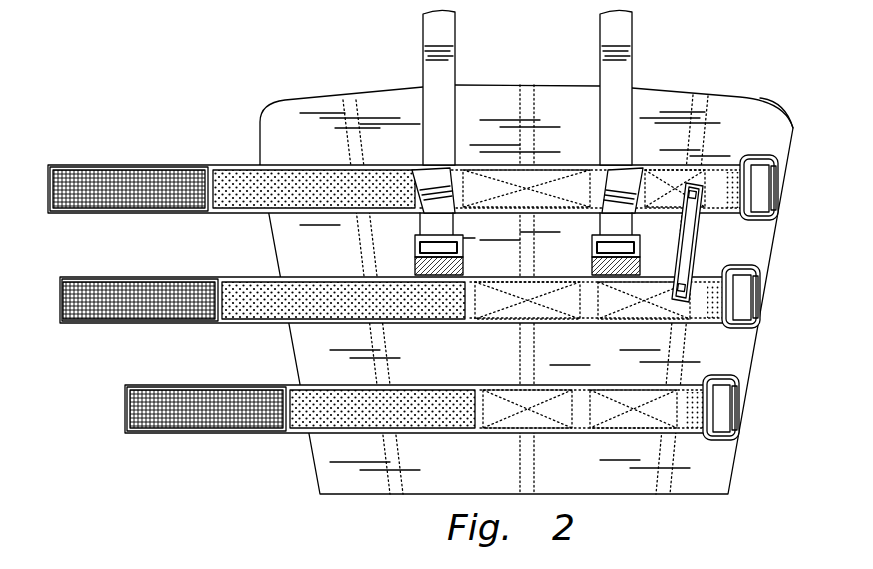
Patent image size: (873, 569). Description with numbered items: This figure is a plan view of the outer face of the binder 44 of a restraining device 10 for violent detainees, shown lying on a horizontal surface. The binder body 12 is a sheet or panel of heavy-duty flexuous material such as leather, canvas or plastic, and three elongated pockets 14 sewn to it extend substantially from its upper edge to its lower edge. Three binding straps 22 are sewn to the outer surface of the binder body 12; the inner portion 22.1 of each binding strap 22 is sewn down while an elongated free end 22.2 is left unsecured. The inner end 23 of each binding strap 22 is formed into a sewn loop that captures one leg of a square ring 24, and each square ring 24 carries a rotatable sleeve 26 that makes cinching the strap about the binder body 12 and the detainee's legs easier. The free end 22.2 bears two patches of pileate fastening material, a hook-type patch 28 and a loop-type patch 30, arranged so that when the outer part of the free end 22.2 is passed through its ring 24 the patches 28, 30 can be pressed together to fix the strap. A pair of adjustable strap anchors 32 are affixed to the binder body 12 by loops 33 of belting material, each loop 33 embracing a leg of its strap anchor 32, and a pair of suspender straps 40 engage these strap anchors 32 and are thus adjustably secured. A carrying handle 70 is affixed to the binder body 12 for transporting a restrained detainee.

The restraining device 10 is at (228, 503).
The binder body 12 is at (470, 95).
The elongated pockets 14 is at (348, 108).
The binding strap 22 is at (95, 213).
The inner portion of binding strap 22.1 is at (545, 170).
The free end of binding strap 22.2 is at (258, 170).
The inner end of binding strap 23 is at (737, 190).
The square ring 24 is at (756, 157).
The rotatable sleeve 26 is at (780, 186).
The hook-type pileate fastening patch 28 is at (150, 172).
The loop-type pileate fastening patch 30 is at (282, 178).
The adjustable strap anchor 32 is at (463, 241).
The loop of belting material 33 is at (463, 265).
The suspender strap 40 is at (432, 33).
The binder 44 is at (790, 104).
The carrying handle 70 is at (686, 232).